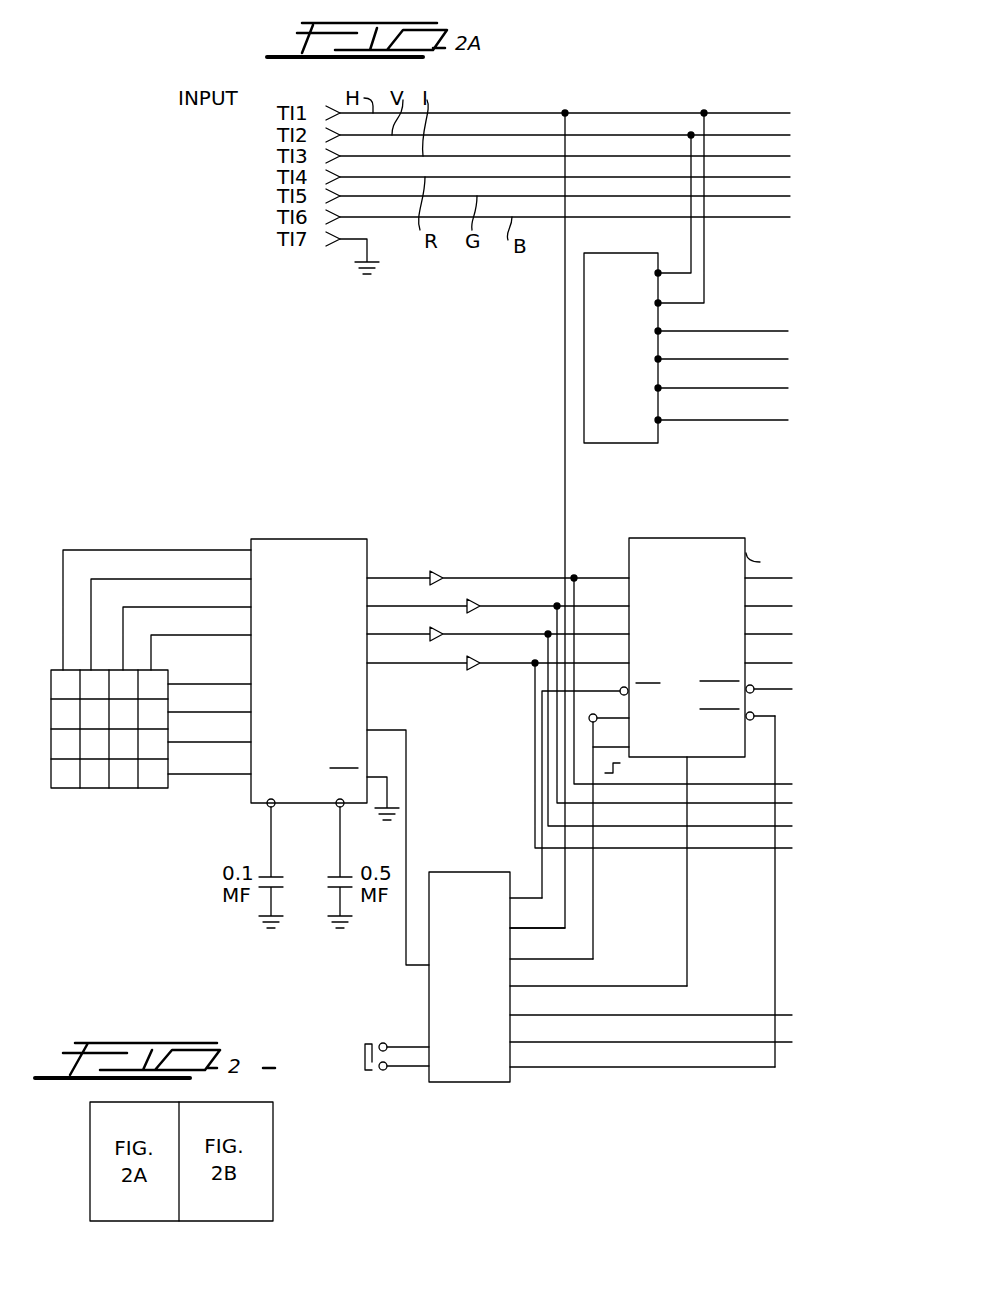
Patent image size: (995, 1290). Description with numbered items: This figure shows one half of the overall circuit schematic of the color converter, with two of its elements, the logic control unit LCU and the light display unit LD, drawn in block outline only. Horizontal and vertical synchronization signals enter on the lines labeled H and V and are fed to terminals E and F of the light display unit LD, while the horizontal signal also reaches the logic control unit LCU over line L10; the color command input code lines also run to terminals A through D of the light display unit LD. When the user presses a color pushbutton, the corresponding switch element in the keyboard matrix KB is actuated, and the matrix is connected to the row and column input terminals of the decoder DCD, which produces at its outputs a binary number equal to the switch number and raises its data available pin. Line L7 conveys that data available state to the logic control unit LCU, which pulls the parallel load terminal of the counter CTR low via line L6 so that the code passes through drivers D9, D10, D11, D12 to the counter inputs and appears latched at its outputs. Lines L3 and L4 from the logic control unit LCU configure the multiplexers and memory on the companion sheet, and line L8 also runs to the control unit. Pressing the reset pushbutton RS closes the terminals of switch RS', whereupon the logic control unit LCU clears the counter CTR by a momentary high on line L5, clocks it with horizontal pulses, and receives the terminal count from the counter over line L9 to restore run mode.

The light display unit LD is at (657, 276).
The decoder DCD is at (312, 539).
The keyboard matrix KB is at (134, 794).
The counter CTR is at (724, 538).
The logic control unit LCU is at (452, 872).
The driver D9 is at (437, 571).
The driver D10 is at (474, 600).
The driver D11 is at (438, 628).
The driver D12 is at (474, 658).
The line L3 is at (558, 1010).
The line L4 is at (559, 1037).
The line L5 is at (558, 981).
The line L6 is at (526, 886).
The line L7 is at (418, 972).
The line L8 is at (556, 954).
The line L9 is at (559, 1062).
The line L10 is at (558, 925).
The reset switch pushbutton RS is at (375, 1056).
The reset switch RS' is at (393, 1105).